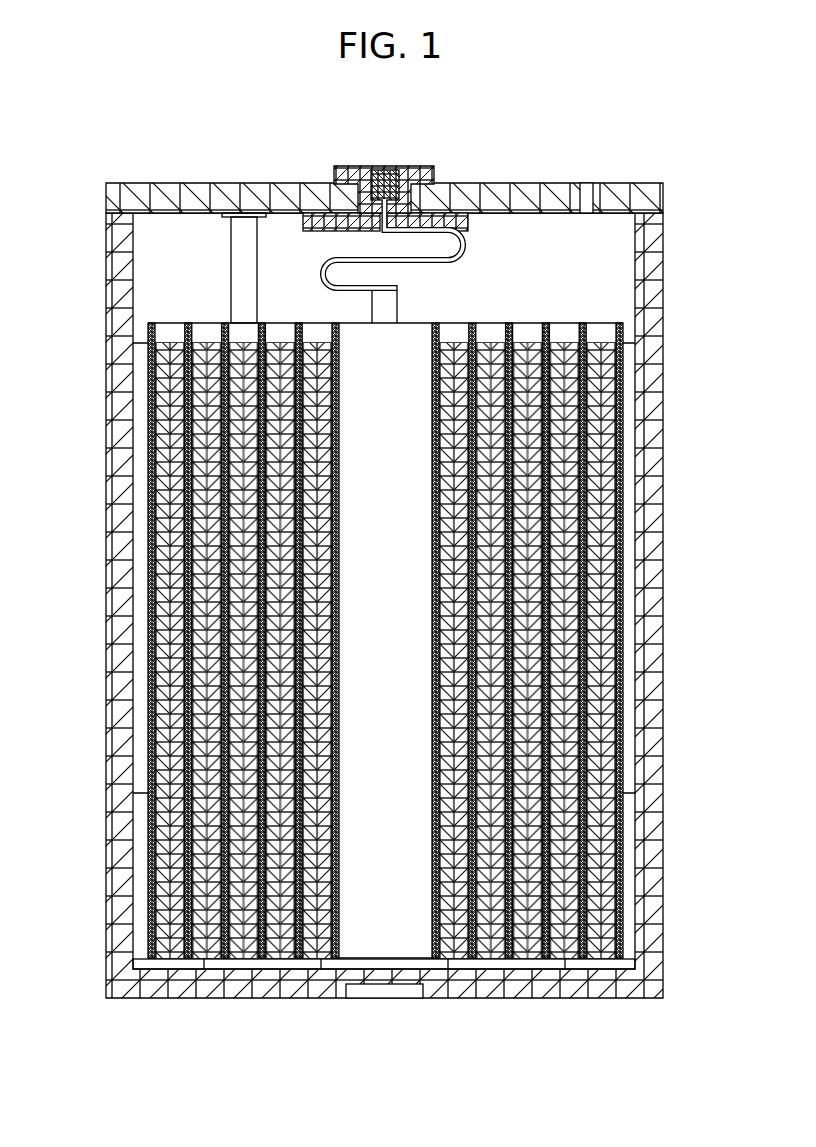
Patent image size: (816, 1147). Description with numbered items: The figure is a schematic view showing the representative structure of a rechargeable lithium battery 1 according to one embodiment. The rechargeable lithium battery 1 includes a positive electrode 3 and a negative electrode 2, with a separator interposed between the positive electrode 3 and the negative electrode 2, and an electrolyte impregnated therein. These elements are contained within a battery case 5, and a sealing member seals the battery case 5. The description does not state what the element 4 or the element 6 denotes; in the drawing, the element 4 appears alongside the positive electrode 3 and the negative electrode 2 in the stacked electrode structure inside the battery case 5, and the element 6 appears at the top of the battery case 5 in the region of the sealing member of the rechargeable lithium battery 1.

The secondary battery 1 is at (383, 543).
The electrode assembly 2 is at (383, 640).
The first electrode plate 3 is at (209, 859).
The second electrode plate 4 is at (185, 915).
The case 5 is at (118, 318).
The electrode terminal 6 is at (340, 165).